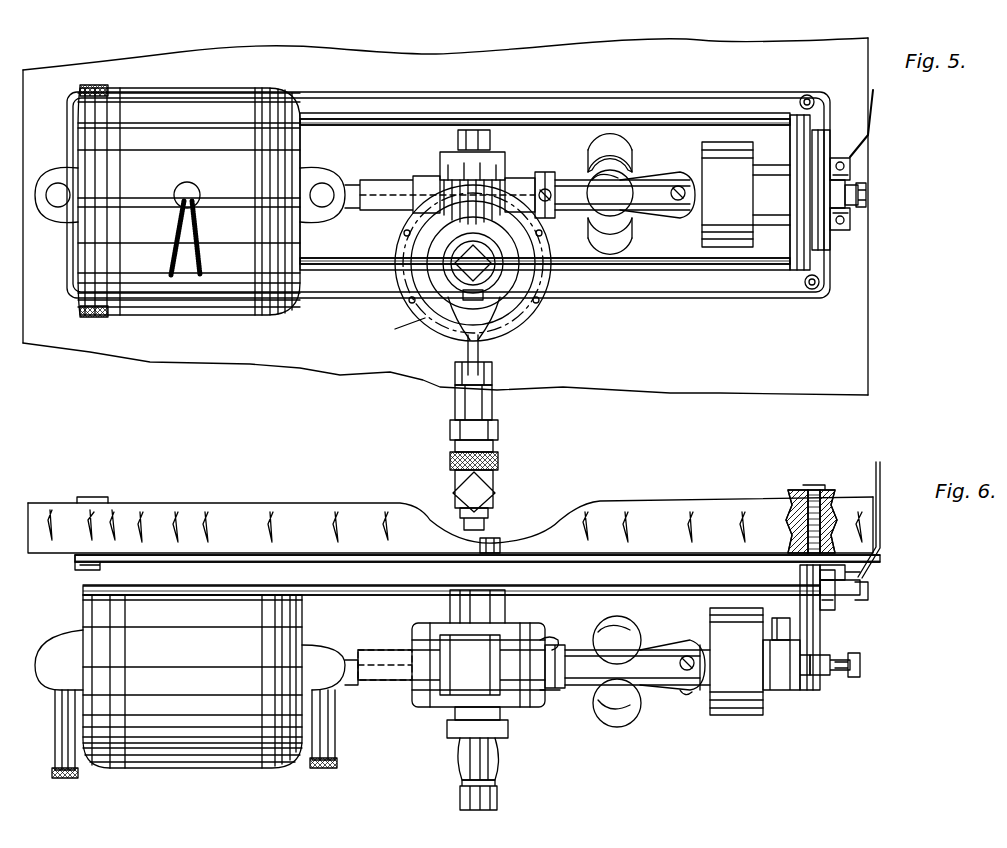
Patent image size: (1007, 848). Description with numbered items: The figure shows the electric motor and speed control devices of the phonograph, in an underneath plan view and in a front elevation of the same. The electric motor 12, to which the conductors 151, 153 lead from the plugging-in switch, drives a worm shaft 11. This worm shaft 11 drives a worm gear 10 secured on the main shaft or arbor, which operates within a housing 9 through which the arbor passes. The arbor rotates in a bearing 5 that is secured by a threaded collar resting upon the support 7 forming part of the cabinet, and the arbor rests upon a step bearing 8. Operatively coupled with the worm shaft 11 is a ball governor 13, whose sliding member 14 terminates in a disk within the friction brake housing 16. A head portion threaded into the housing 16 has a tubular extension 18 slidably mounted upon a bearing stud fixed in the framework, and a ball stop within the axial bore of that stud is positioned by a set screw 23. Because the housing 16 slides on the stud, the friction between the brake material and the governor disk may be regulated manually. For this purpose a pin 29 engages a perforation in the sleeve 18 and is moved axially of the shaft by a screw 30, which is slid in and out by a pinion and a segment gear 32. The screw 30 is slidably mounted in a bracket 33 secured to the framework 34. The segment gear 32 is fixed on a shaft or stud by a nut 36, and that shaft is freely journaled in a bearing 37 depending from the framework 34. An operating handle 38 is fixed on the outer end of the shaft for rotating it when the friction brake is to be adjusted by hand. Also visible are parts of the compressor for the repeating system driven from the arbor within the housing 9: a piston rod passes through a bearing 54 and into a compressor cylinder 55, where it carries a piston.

In FIG. 6, the bearing 5 is at (496, 540).
In FIG. 5, the support 7 is at (716, 395).
In FIG. 6, the support 7 is at (652, 508).
In FIG. 5, the step bearing 8 is at (460, 273).
In FIG. 6, the step bearing 8 is at (500, 796).
In FIG. 5, the housing 9 is at (516, 316).
In FIG. 6, the housing 9 is at (410, 626).
In FIG. 5, the worm gear 10 is at (398, 242).
In FIG. 5, the worm shaft 11 is at (508, 172).
In FIG. 5, the electric motor 12 is at (176, 97).
In FIG. 6, the electric motor 12 is at (150, 770).
In FIG. 5, the ball governor 13 is at (630, 233).
In FIG. 6, the ball governor 13 is at (616, 727).
In FIG. 5, the sliding member 14 is at (682, 178).
In FIG. 6, the sliding member 14 is at (700, 690).
In FIG. 5, the friction brake housing 16 is at (720, 248).
In FIG. 6, the friction brake housing 16 is at (772, 715).
In FIG. 5, the tubular extension 18 is at (772, 222).
In FIG. 6, the tubular extension 18 is at (770, 705).
In FIG. 5, the set screw 23 is at (862, 205).
In FIG. 6, the set screw 23 is at (858, 677).
In FIG. 6, the pin 29 is at (788, 690).
In FIG. 5, the screw 30 is at (840, 194).
In FIG. 6, the screw 30 is at (820, 640).
In FIG. 5, the segment gear 32 is at (830, 250).
In FIG. 6, the segment gear 32 is at (822, 620).
In FIG. 5, the bracket 33 is at (800, 248).
In FIG. 6, the bracket 33 is at (806, 598).
In FIG. 5, the framework 34 is at (738, 297).
In FIG. 6, the framework 34 is at (672, 592).
In FIG. 6, the nut 36 is at (862, 575).
In FIG. 6, the bearing 37 is at (868, 596).
In FIG. 5, the operating handle 38 is at (876, 110).
In FIG. 6, the operating handle 38 is at (882, 520).
In FIG. 5, the bearing 54 is at (450, 360).
In FIG. 5, the compressor cylinder 55 is at (494, 410).
In FIG. 5, the conductor 151 is at (203, 238).
In FIG. 5, the conductor 153 is at (180, 238).